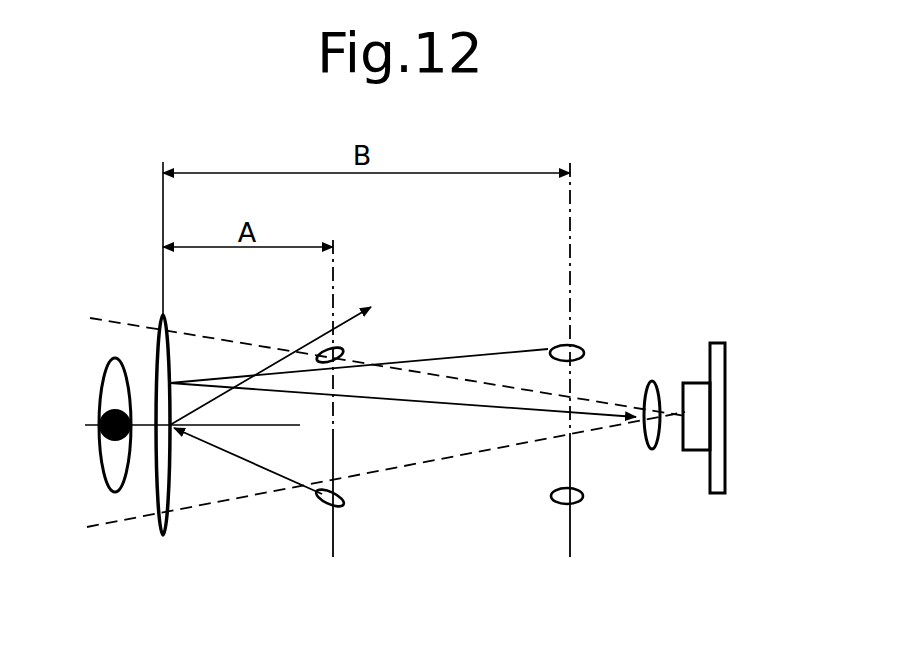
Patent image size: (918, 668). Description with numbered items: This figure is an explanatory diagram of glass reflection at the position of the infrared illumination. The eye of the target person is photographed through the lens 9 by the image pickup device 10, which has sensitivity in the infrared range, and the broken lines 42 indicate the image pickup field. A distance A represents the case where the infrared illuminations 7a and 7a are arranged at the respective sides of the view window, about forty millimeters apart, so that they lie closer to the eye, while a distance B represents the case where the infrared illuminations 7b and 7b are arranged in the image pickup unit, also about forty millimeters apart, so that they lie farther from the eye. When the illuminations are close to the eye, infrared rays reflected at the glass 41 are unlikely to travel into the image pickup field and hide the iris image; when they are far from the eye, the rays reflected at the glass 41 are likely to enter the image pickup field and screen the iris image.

The infrared illumination 7a is at (343, 350).
The infrared illumination 7b is at (580, 346).
The lens 9 is at (657, 449).
The image pickup device 10 is at (726, 418).
The glass 41 is at (168, 522).
The broken lines 42 is at (120, 522).